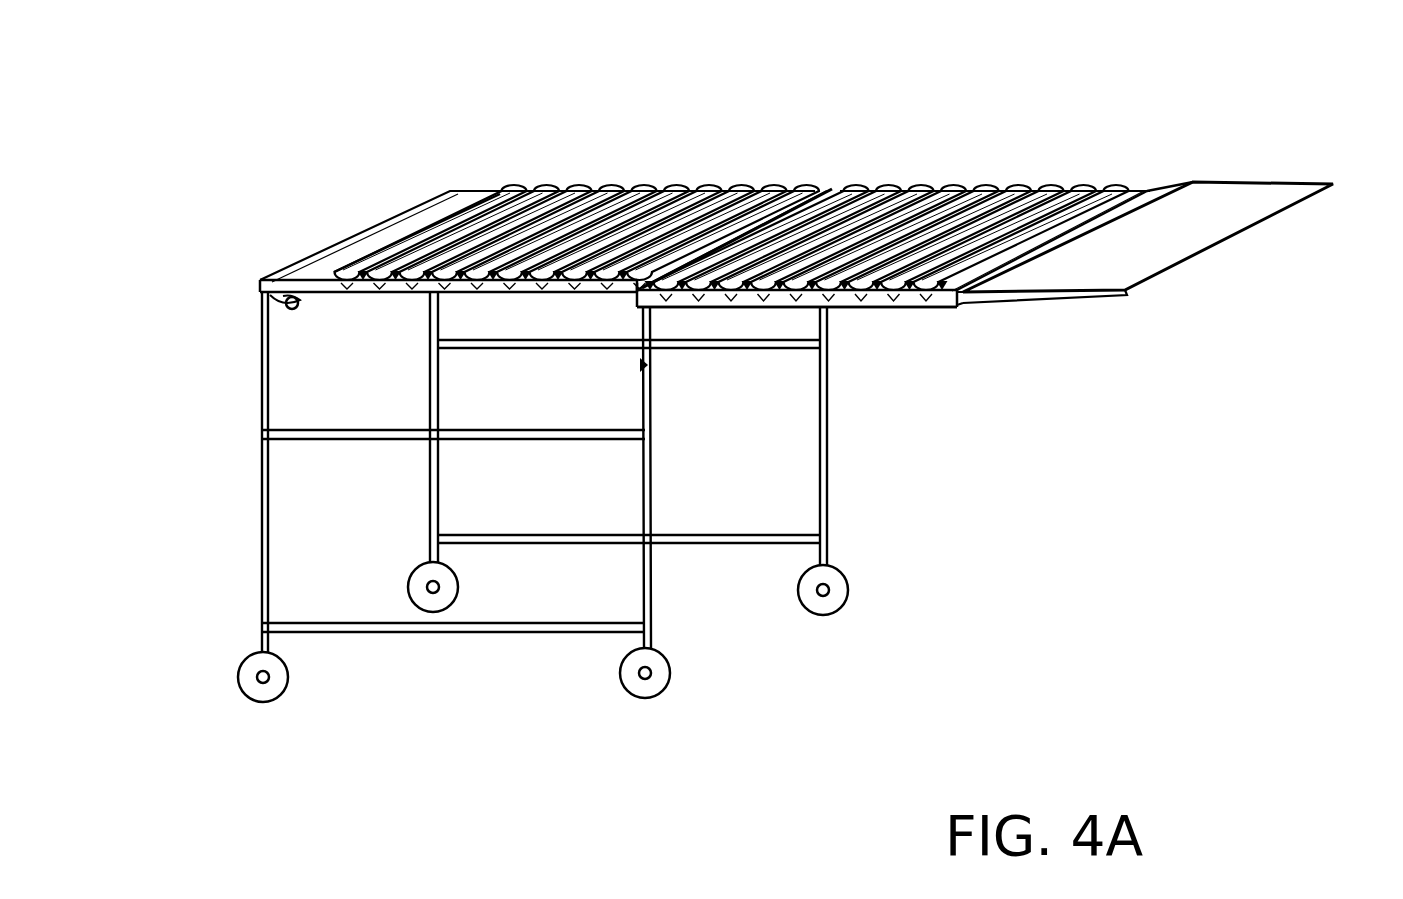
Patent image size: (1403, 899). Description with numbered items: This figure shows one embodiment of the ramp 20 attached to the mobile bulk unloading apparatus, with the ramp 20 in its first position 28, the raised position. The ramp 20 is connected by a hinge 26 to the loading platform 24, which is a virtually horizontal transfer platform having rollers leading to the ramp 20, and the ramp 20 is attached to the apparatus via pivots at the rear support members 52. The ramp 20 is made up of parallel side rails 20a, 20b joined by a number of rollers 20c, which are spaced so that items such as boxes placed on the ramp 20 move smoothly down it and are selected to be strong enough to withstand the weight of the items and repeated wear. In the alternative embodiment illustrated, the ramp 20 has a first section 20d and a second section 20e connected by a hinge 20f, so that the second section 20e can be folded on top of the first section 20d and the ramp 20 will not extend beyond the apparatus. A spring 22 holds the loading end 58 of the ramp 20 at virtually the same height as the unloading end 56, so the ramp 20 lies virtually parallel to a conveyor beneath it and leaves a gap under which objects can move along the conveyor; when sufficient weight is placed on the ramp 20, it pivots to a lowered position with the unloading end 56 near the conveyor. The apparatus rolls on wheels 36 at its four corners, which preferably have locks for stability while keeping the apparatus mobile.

The ramp 20 is at (757, 197).
The side rail 20a is at (900, 304).
The side rail 20b is at (1117, 188).
The rollers 20c is at (1153, 190).
The first section 20d is at (636, 186).
The second section 20e is at (1013, 182).
The hinge 20f is at (832, 197).
The spring 22 is at (258, 297).
The loading platform 24 is at (372, 227).
The hinge 26 is at (493, 188).
The first position 28 is at (815, 165).
The wheels 36 is at (282, 681).
The rear support members 52 is at (253, 580).
The unloading end 56 is at (1285, 262).
The loading end 58 is at (398, 183).